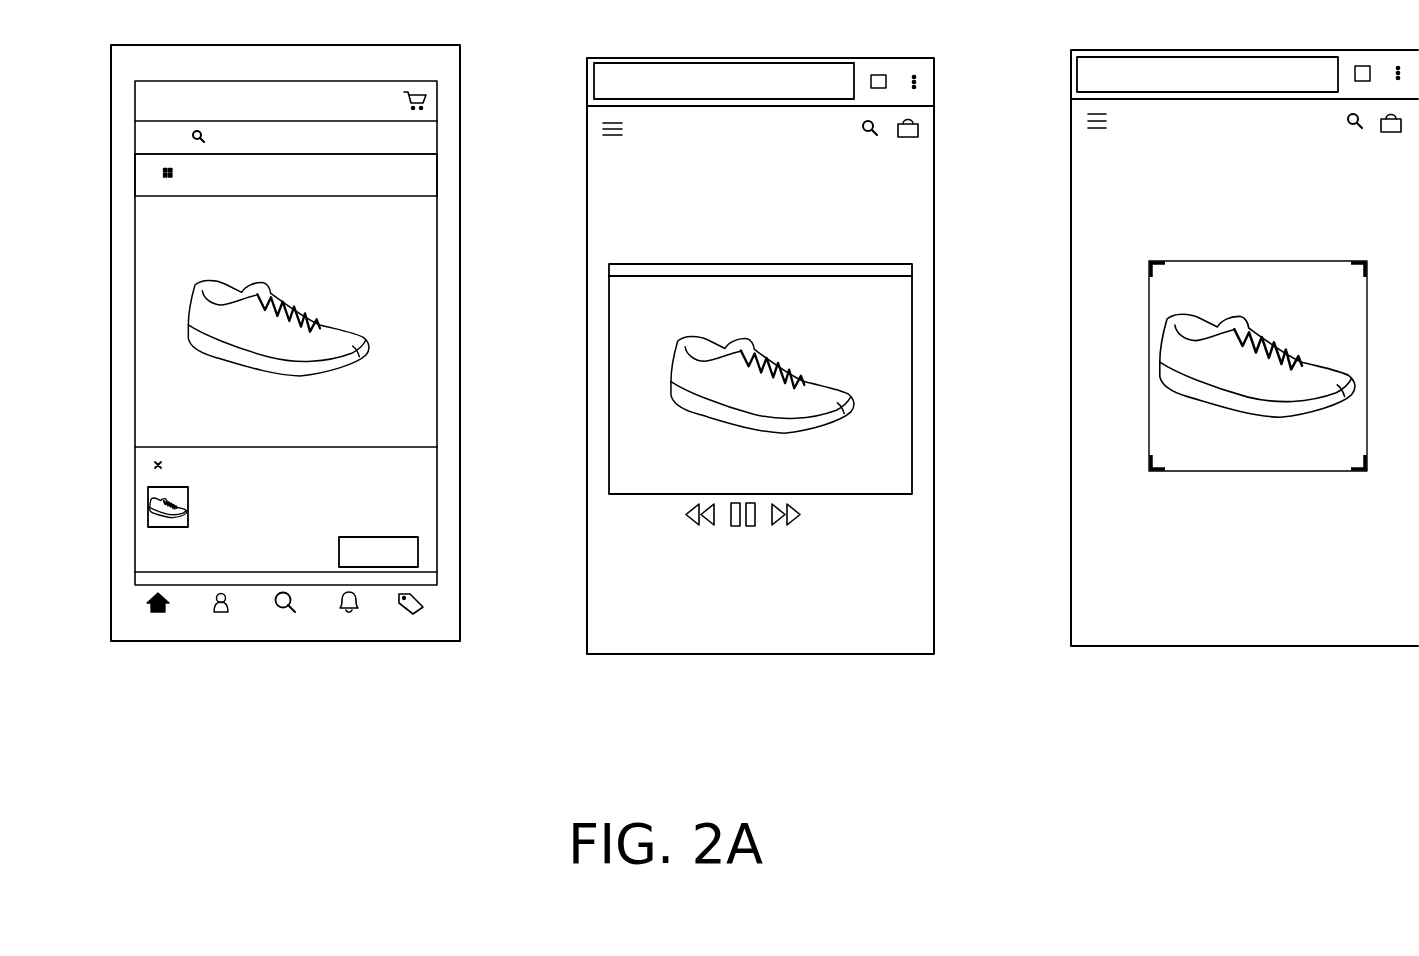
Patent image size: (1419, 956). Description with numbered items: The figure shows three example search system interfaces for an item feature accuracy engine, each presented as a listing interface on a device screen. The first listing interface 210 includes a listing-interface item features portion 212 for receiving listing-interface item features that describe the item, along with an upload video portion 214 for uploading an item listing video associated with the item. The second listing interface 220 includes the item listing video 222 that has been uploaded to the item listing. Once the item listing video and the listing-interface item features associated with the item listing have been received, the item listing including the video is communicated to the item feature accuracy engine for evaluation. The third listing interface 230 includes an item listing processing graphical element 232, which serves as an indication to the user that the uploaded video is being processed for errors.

The listing interface 210 is at (160, 45).
The listing-interface item features portion 212 is at (146, 174).
The upload video portion 214 is at (149, 510).
The listing interface 220 is at (640, 58).
The item listing video 222 is at (734, 264).
The listing interface 230 is at (1127, 50).
The item listing processing graphical element 232 is at (1219, 261).